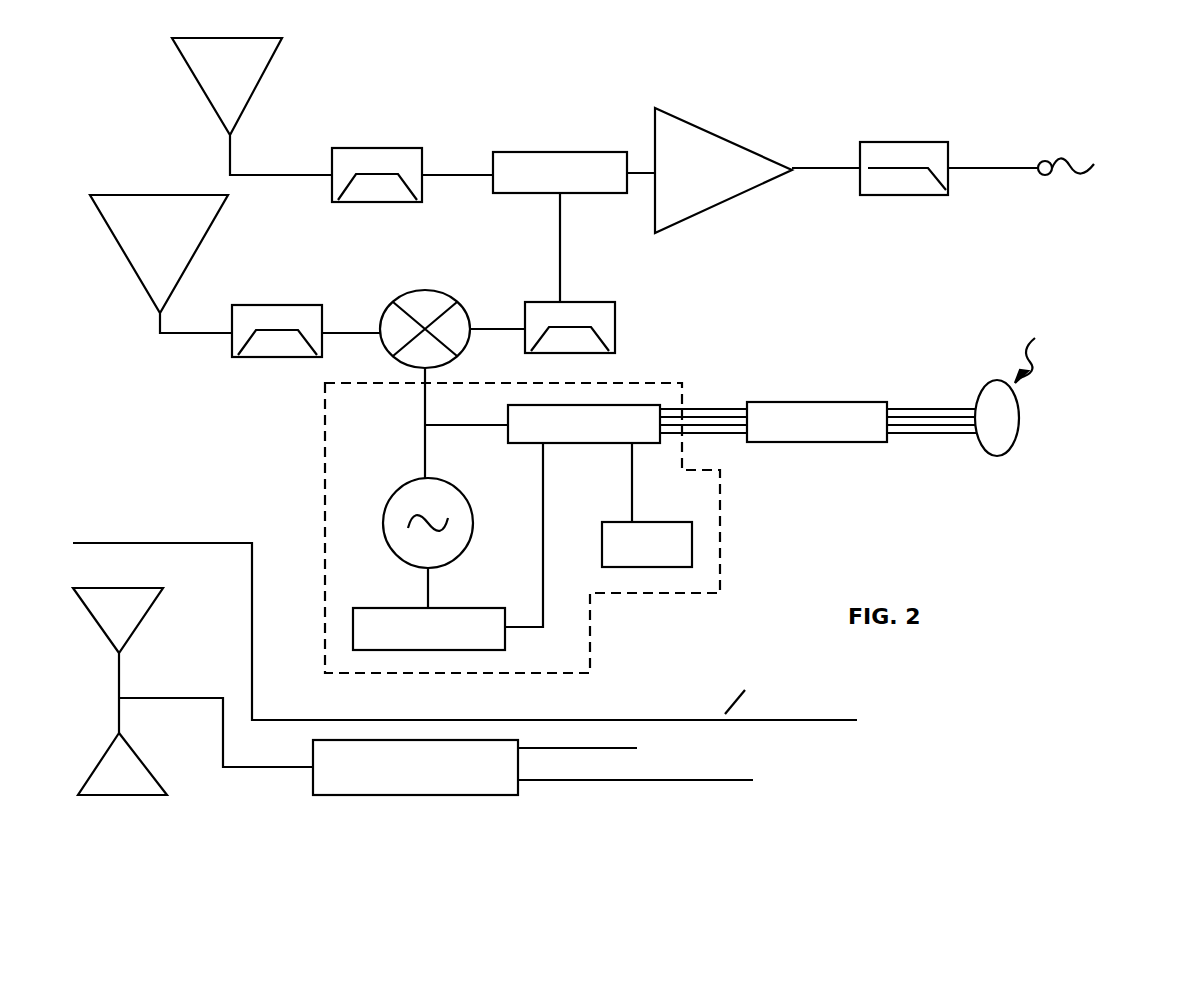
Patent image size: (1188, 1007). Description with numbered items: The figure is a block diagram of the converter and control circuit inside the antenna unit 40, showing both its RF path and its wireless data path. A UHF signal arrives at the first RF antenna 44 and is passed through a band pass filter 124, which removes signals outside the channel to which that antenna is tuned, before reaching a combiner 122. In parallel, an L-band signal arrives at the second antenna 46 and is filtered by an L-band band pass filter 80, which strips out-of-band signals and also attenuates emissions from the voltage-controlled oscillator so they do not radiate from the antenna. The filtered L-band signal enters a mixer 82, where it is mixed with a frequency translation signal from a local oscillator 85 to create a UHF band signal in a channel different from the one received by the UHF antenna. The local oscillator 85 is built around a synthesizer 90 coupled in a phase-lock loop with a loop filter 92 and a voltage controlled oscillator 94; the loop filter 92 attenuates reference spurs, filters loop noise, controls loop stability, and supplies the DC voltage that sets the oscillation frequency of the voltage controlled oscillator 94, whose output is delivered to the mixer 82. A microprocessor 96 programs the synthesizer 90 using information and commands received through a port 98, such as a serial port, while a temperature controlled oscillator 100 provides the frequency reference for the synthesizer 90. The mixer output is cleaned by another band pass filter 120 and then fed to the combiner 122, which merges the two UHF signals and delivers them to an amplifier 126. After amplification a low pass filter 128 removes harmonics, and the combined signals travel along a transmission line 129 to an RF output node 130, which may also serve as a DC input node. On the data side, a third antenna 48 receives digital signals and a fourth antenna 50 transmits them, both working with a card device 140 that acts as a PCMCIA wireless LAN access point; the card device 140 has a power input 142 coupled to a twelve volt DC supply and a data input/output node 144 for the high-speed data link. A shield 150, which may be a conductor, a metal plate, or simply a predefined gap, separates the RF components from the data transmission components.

The antenna unit 40 is at (540, 110).
The first RF antenna 44 is at (258, 86).
The second antenna 46 is at (185, 255).
The third antenna 48 is at (148, 620).
The fourth antenna 50 is at (150, 762).
The L-band band pass filter 80 is at (290, 304).
The mixer 82 is at (428, 293).
The local oscillator 85 is at (302, 508).
The synthesizer 90 is at (585, 404).
The loop filter 92 is at (455, 607).
The voltage controlled oscillator 94 is at (455, 497).
The microprocessor 96 is at (765, 400).
The port 98 is at (1020, 416).
The temperature controlled oscillator 100 is at (648, 521).
The band pass filter 120 is at (588, 300).
The combiner 122 is at (562, 150).
The band pass filter 124 is at (376, 147).
The amplifier 126 is at (728, 137).
The low pass filter 128 is at (905, 139).
The transmission line 129 is at (982, 166).
The RF output node 130 is at (1091, 163).
The card device 140 is at (455, 796).
The power input 142 is at (520, 750).
The data input/output node 144 is at (520, 790).
The shield 150 is at (830, 712).